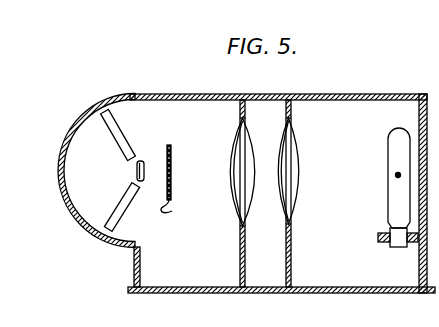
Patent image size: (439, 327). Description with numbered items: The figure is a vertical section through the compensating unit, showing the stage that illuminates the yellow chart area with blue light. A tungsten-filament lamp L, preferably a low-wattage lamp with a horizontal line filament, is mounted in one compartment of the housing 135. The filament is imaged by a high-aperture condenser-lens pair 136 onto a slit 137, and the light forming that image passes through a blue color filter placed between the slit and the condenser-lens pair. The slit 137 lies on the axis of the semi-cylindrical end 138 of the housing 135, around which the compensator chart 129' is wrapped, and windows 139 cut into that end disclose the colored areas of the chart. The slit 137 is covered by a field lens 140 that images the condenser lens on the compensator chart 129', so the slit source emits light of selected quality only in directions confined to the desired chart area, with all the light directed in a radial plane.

The housing 135 is at (385, 83).
The semi-cylindrical end 138 is at (92, 111).
The compensator chart 129' is at (97, 227).
The windows 139 is at (66, 185).
The field lens 140 is at (137, 171).
The slit 137 is at (145, 170).
The condenser-lens pair 136 is at (283, 208).
The tungsten-filament lamp L is at (388, 141).